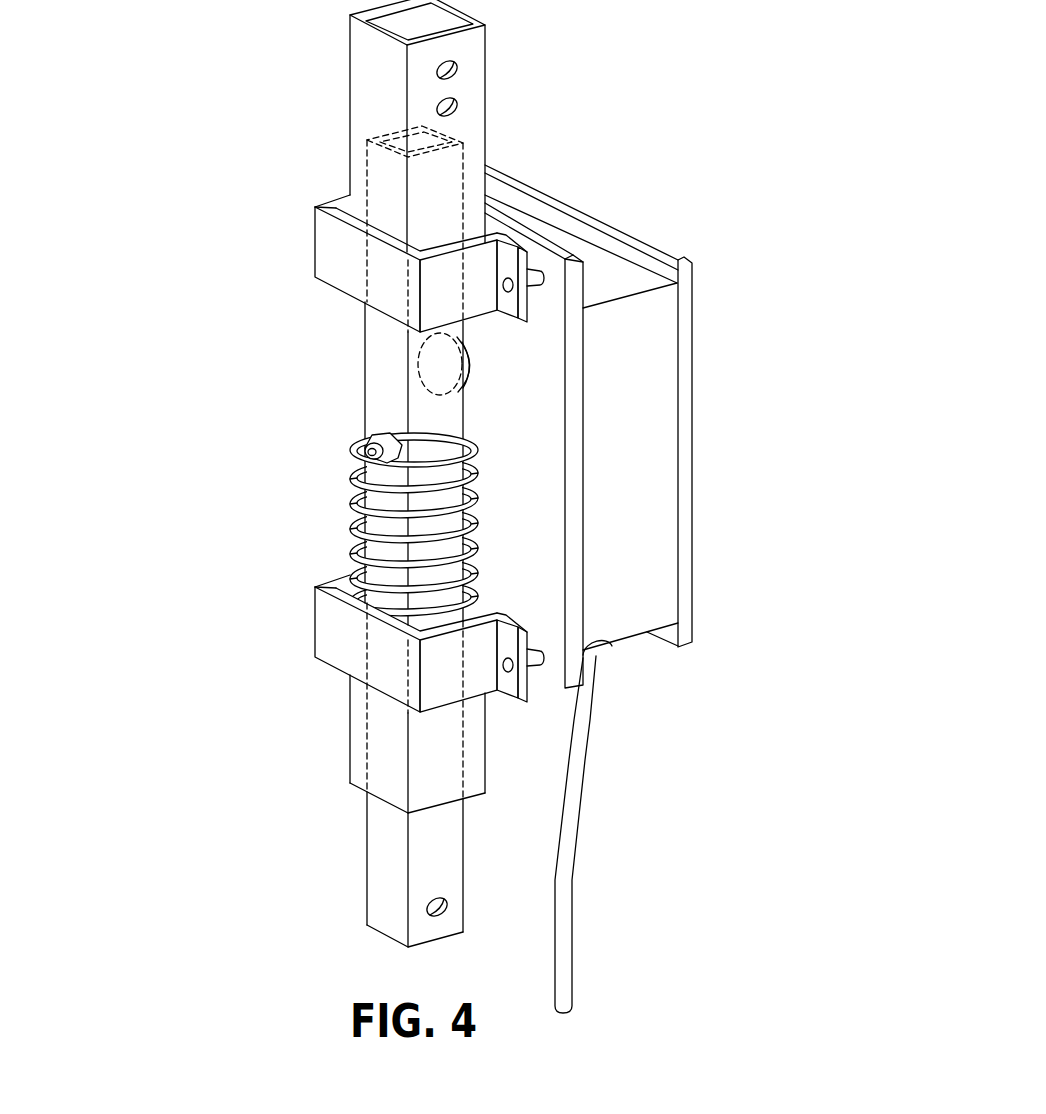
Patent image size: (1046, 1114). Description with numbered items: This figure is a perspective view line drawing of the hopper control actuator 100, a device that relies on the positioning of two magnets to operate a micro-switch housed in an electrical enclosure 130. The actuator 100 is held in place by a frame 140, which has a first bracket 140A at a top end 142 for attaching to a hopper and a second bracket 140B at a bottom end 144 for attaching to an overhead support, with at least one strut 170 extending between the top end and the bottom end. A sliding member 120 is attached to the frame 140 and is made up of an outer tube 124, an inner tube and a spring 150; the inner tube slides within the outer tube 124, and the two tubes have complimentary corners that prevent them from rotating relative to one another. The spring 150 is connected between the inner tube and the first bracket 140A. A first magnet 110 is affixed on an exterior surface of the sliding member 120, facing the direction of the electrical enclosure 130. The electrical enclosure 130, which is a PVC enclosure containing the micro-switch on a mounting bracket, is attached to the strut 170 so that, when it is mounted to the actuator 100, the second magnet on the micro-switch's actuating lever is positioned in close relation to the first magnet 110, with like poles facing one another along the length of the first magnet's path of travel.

The hopper control actuator 100 is at (578, 78).
The first magnet 110 is at (477, 370).
The sliding member 120 is at (366, 356).
The outer tube 124 is at (350, 732).
The electrical enclosure 130 is at (628, 638).
The frame 140 is at (260, 183).
The first bracket 140A is at (315, 243).
The second bracket 140B is at (315, 603).
The top end 142 is at (350, 62).
The bottom end 144 is at (366, 880).
The spring 150 is at (353, 530).
The strut 170 is at (535, 266).